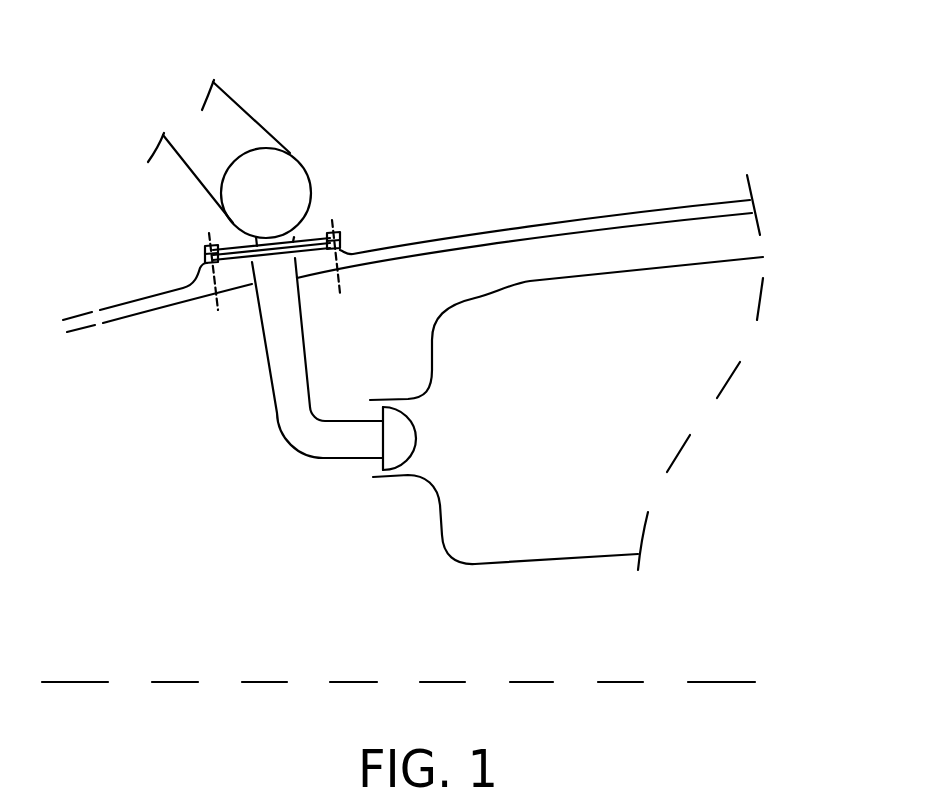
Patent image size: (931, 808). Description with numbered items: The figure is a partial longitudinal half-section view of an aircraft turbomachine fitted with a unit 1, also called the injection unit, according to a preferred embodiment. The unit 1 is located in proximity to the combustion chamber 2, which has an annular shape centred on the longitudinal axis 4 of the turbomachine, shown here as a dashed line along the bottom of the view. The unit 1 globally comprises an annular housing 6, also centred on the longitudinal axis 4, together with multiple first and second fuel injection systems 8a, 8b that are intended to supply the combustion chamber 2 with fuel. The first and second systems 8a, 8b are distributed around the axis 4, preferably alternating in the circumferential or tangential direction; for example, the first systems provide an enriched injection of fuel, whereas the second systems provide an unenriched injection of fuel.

The unit 1 is at (443, 67).
The combustion chamber 2 is at (562, 404).
The longitudinal axis 4 is at (727, 681).
The annular housing 6 is at (566, 226).
The first fuel injection system 8a is at (235, 97).
The second fuel injection system 8b is at (190, 178).